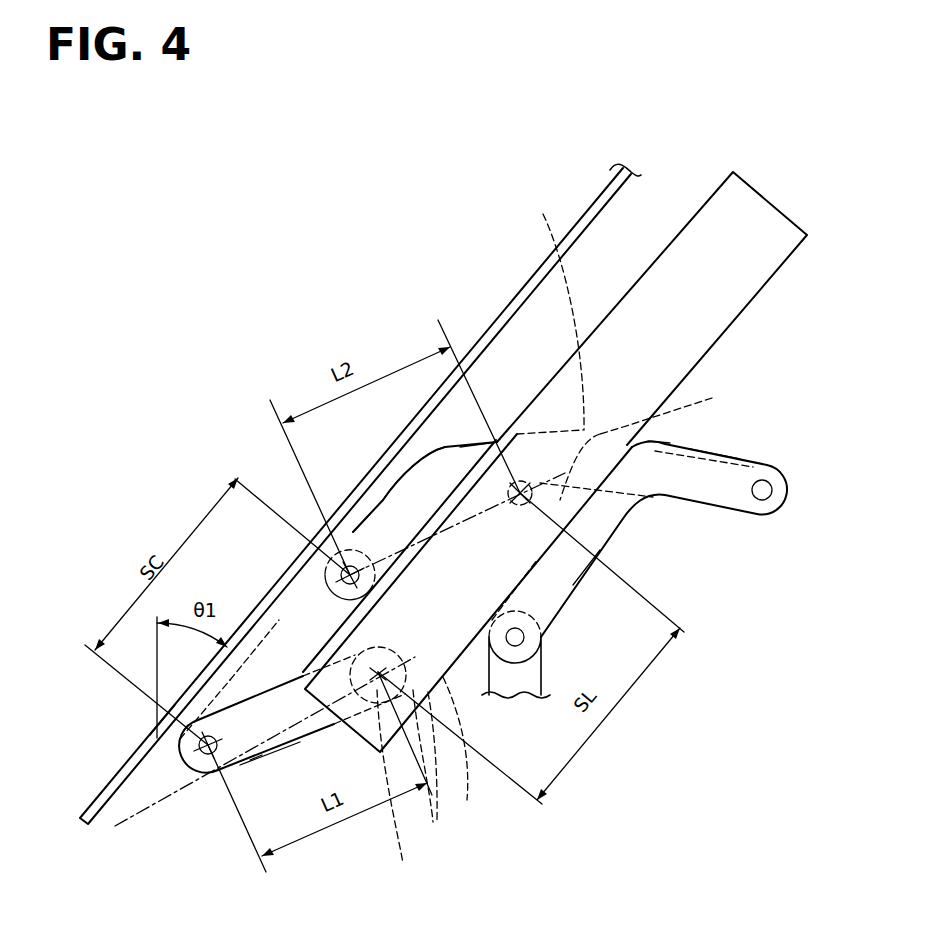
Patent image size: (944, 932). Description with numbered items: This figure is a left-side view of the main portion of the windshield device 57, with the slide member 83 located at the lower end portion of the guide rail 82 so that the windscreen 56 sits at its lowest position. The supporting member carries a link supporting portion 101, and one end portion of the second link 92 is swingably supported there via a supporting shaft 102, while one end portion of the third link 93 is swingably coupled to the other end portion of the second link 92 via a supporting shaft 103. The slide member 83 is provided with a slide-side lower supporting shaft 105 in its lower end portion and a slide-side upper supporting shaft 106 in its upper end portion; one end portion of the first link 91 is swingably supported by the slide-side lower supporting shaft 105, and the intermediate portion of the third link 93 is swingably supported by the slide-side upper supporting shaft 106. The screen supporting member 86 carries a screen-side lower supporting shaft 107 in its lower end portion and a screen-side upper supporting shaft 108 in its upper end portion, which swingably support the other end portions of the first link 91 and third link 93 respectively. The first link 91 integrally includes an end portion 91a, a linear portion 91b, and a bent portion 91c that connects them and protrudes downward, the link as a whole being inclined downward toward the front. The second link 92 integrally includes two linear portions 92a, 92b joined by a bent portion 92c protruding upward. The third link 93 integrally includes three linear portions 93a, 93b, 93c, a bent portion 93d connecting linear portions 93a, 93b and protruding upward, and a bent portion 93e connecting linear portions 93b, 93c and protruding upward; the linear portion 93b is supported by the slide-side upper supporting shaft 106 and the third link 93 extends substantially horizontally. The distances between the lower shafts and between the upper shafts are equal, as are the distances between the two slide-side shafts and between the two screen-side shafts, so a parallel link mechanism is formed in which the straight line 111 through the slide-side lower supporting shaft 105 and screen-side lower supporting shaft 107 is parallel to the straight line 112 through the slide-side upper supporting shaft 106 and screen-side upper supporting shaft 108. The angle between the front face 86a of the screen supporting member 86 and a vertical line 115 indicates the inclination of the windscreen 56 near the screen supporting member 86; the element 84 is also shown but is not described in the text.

The windscreen 56 is at (592, 206).
The windshield device 57 is at (505, 283).
The guide rail 82 is at (705, 222).
The slide member 83 is at (458, 750).
The spring 84 is at (258, 755).
The screen supporting member 86 is at (277, 623).
The front face 86a is at (180, 695).
The first link 91 is at (290, 743).
The end portion 91a is at (431, 768).
The linear portion 91b is at (270, 757).
The bent portion 91c is at (404, 791).
The second link 92 is at (627, 528).
The linear portion 92a is at (573, 585).
The linear portion 92b is at (712, 446).
The bent portion 92c is at (670, 442).
The third link 93 is at (437, 463).
The linear portion 93a is at (687, 503).
The linear portion 93b is at (473, 443).
The linear portion 93c is at (358, 550).
The bent portion 93d is at (549, 309).
The bent portion 93e is at (452, 443).
The link supporting portion 101 is at (527, 688).
The supporting shaft 102 is at (522, 640).
The supporting shaft 103 is at (765, 495).
The slide-side lower supporting shaft 105 is at (380, 690).
The slide-side upper supporting shaft 106 is at (672, 404).
The screen-side lower supporting shaft 107 is at (200, 758).
The screen-side upper supporting shaft 108 is at (344, 567).
The straight line 111 is at (150, 795).
The straight line 112 is at (318, 545).
The vertical line 115 is at (152, 640).